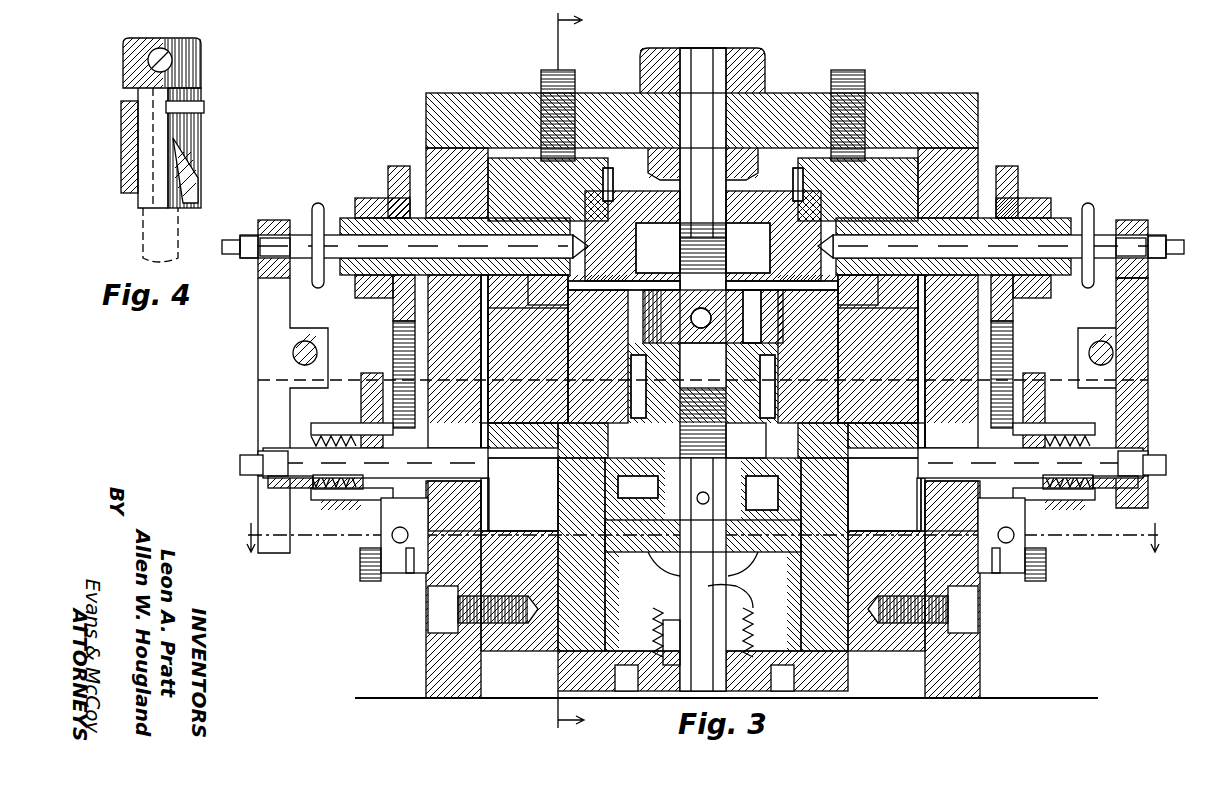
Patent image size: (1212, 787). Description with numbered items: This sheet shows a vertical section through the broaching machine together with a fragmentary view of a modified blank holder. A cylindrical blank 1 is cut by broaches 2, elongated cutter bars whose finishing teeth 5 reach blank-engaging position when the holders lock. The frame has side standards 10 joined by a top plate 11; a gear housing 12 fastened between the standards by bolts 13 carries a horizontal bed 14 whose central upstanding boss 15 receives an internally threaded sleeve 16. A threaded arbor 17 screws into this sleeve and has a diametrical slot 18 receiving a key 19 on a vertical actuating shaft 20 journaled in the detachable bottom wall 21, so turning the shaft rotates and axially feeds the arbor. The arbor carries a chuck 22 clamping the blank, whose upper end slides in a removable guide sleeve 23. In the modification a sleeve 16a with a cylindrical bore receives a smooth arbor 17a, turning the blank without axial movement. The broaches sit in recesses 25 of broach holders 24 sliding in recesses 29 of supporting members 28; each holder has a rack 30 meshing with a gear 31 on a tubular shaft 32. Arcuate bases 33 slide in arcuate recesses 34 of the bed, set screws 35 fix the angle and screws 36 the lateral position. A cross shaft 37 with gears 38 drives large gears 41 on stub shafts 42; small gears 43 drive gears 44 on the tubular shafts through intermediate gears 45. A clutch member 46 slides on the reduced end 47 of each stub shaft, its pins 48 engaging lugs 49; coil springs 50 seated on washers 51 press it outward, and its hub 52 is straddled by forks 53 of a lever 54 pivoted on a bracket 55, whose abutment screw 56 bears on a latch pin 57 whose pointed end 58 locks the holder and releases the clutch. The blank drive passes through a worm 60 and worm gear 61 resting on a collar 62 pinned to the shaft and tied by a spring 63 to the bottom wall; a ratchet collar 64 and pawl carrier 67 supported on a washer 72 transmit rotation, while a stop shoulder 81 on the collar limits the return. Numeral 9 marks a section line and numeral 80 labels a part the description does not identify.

In FIG. 3, the blank 1 is at (688, 165).
In FIG. 3, the broaches 2 is at (712, 238).
In FIG. 3, the finishing teeth 5 is at (701, 534).
In FIG. 3, the section line 9- 9 is at (548, 373).
In FIG. 3, the side standards 10 is at (418, 145).
In FIG. 3, the top plate 11 is at (950, 86).
In FIG. 3, the gear housing 12 is at (840, 491).
In FIG. 3, the bolts 13 is at (420, 620).
In FIG. 3, the horizontal bed 14 is at (884, 494).
In FIG. 3, the central upstanding boss 15 is at (767, 391).
In FIG. 3, the internally threaded sleeve 16 is at (623, 389).
In FIG. 4, the sleeve 16a is at (113, 152).
In FIG. 3, the threaded arbor 17 is at (744, 335).
In FIG. 4, the smooth cylindrical arbor 17a is at (165, 152).
In FIG. 3, the diametrical slot 18 is at (703, 574).
In FIG. 3, the key 19 is at (749, 439).
In FIG. 4, the actuating shaft 20 is at (135, 239).
In FIG. 3, the actuating shaft 20 is at (655, 624).
In FIG. 3, the bottom wall 21 is at (840, 670).
In FIG. 3, the blank holding chuck 22 is at (657, 317).
In FIG. 3, the guide sleeve 23 is at (735, 42).
In FIG. 3, the broach holders 24 is at (572, 192).
In FIG. 3, the inwardly facing recesses 25 is at (770, 220).
In FIG. 3, the supporting members 28 is at (473, 391).
In FIG. 3, the recesses 29 is at (596, 326).
In FIG. 3, the rack 30 is at (540, 291).
In FIG. 3, the gear 31 is at (610, 275).
In FIG. 3, the tubular shaft 32 is at (347, 195).
In FIG. 3, the arcuate bases 33 is at (498, 423).
In FIG. 3, the arcuate recesses 34 is at (532, 415).
In FIG. 3, the set screws 35 is at (553, 62).
In FIG. 3, the screws 36 is at (390, 300).
In FIG. 3, the cross shaft 37 is at (490, 549).
In FIG. 3, the gears 38 is at (362, 575).
In FIG. 3, the large gears 41 is at (353, 383).
In FIG. 3, the stub shafts 42 is at (481, 486).
In FIG. 3, the small gear 43 is at (462, 498).
In FIG. 3, the gears 44 is at (380, 168).
In FIG. 3, the intermediate gears 45 is at (385, 341).
In FIG. 3, the clutch member 46 is at (305, 492).
In FIG. 3, the reduced outer end 47 is at (240, 468).
In FIG. 3, the clutch pins 48 is at (318, 415).
In FIG. 3, the lugs 49 is at (373, 521).
In FIG. 3, the coil springs 50 is at (305, 472).
In FIG. 3, the washers 51 is at (703, 462).
In FIG. 3, the hubs 52 is at (272, 481).
In FIG. 3, the forks 53 is at (250, 453).
In FIG. 3, the actuating levers 54 is at (250, 376).
In FIG. 3, the brackets 55 is at (324, 326).
In FIG. 3, the adjustable abutment screws 56 is at (300, 215).
In FIG. 3, the latch pins 57 is at (442, 227).
In FIG. 3, the pointed inner ends 58 is at (580, 237).
In FIG. 3, the worm 60 is at (645, 558).
In FIG. 3, the worm gear 61 is at (748, 558).
In FIG. 3, the collar 62 is at (655, 590).
In FIG. 3, the coil spring 63 is at (745, 613).
In FIG. 3, the ratchet collar 64 is at (610, 489).
In FIG. 3, the carrier 67 is at (612, 451).
In FIG. 3, the washer 72 is at (762, 493).
In FIG. 3, the pin 80 is at (600, 160).
In FIG. 3, the peripheral stop shoulder 81 is at (730, 585).